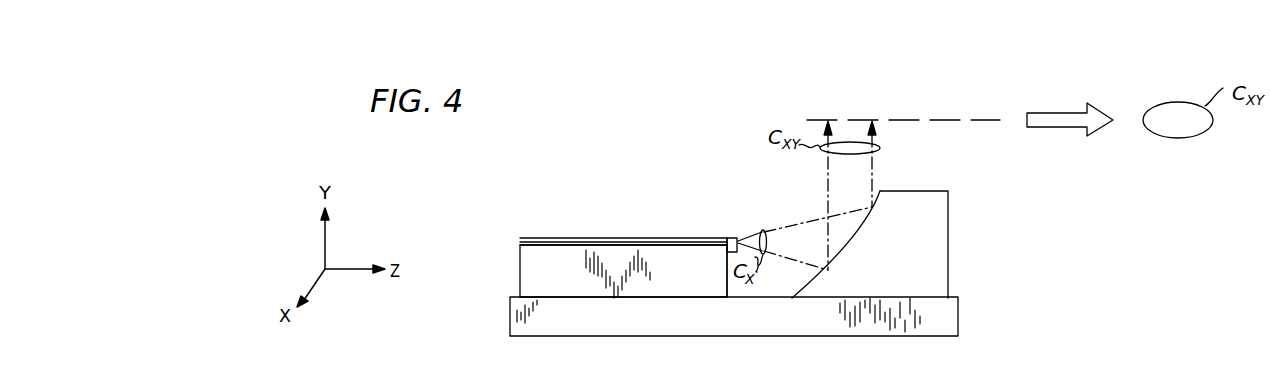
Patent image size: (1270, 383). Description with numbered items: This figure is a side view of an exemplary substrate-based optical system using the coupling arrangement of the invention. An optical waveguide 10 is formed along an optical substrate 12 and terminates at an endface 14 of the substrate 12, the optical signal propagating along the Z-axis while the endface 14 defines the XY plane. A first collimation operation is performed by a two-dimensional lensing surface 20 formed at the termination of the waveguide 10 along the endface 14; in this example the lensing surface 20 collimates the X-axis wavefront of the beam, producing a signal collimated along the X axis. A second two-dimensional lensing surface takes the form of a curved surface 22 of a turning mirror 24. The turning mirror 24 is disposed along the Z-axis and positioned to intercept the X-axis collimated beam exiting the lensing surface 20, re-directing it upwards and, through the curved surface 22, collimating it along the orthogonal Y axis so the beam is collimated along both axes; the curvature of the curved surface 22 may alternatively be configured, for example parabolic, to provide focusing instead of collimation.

The optical waveguide 10 is at (572, 243).
The optical substrate 12 is at (528, 272).
The endface 14 is at (726, 271).
The two-dimensional lensing surface 20 is at (739, 240).
The curved surface 22 is at (852, 245).
The turning mirror 24 is at (933, 243).